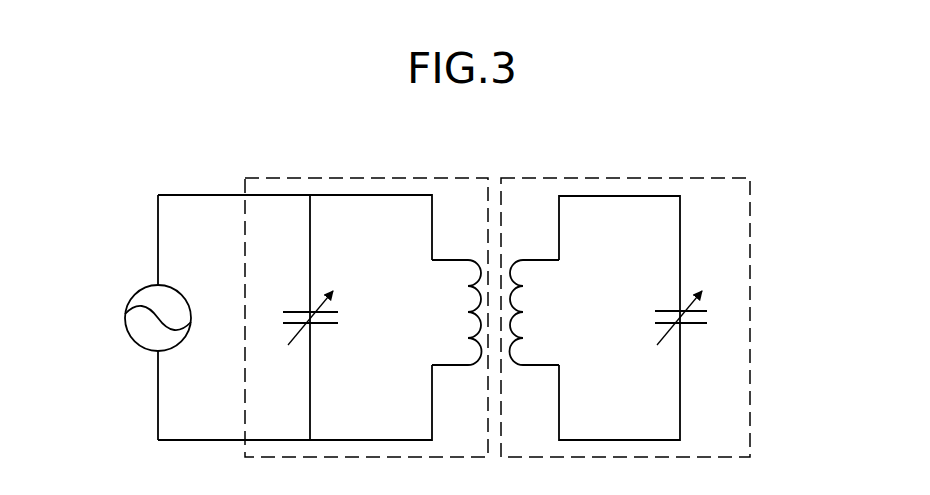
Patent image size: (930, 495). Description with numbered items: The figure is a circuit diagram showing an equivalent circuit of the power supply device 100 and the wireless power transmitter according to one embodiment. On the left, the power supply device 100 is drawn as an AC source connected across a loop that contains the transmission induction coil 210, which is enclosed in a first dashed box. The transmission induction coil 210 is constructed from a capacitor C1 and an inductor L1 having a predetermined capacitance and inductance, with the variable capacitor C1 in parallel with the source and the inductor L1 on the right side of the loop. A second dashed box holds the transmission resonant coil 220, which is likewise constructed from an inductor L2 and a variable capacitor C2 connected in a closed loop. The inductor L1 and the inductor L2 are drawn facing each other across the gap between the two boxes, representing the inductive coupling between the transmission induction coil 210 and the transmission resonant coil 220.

The power supply device 100 is at (137, 290).
The transmission induction coil 210 is at (396, 177).
The transmission resonant coil 220 is at (565, 177).
The capacitor C1 is at (297, 317).
The inductor L1 is at (457, 312).
The inductor L2 is at (535, 312).
The capacitor C2 is at (697, 318).